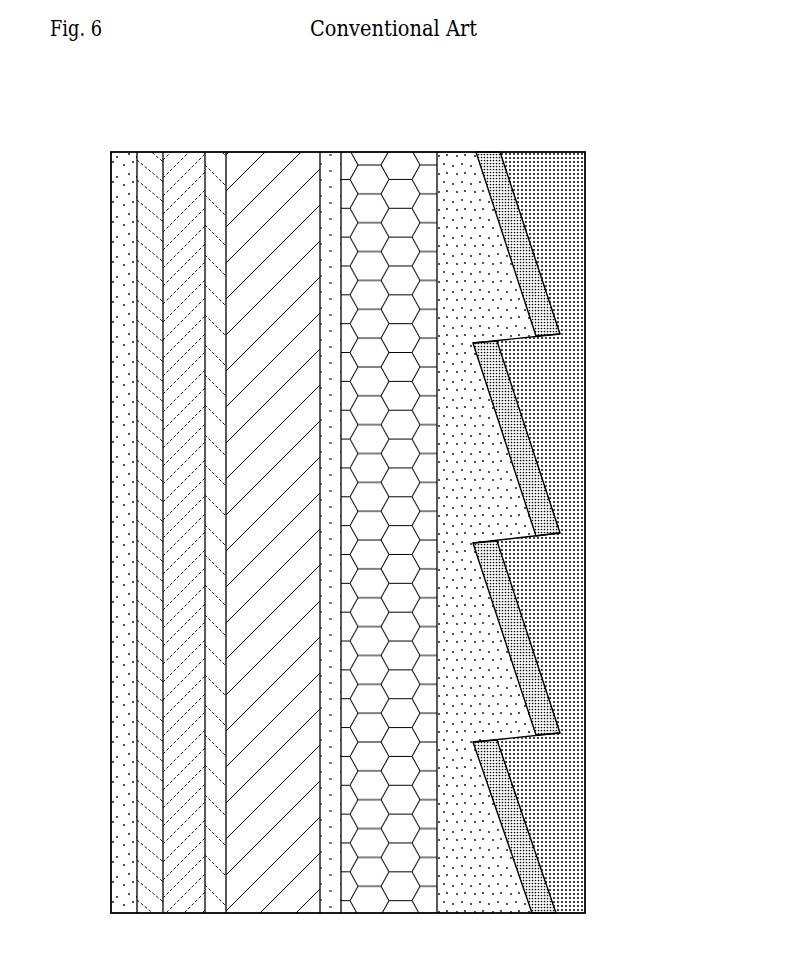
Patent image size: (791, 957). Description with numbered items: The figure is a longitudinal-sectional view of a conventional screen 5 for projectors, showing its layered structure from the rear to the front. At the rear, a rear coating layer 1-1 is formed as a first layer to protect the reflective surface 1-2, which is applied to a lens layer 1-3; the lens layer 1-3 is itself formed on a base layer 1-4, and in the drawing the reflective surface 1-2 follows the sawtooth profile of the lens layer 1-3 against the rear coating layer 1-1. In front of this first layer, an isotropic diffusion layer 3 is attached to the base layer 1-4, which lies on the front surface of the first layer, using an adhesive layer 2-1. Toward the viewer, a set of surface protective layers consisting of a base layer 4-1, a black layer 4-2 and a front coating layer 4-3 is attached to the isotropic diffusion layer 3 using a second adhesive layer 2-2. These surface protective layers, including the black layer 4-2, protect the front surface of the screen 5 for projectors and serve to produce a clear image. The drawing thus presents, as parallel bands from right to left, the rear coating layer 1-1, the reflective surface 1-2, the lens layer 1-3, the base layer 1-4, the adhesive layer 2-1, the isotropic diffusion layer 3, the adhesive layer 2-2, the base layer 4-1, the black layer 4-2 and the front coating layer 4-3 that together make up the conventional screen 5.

The screen for projectors 5 is at (625, 281).
The front coating layer 4-3 is at (125, 165).
The black layer 4-2 is at (155, 167).
The base layer 4-1 is at (185, 167).
The adhesive layer 2-2 is at (218, 167).
The isotropic diffusion layer 3 is at (278, 167).
The adhesive layer 2-1 is at (333, 167).
The base layer 1-4 is at (387, 167).
The lens layer 1-3 is at (457, 167).
The reflective surface 1-2 is at (495, 167).
The rear coating layer 1-1 is at (547, 167).